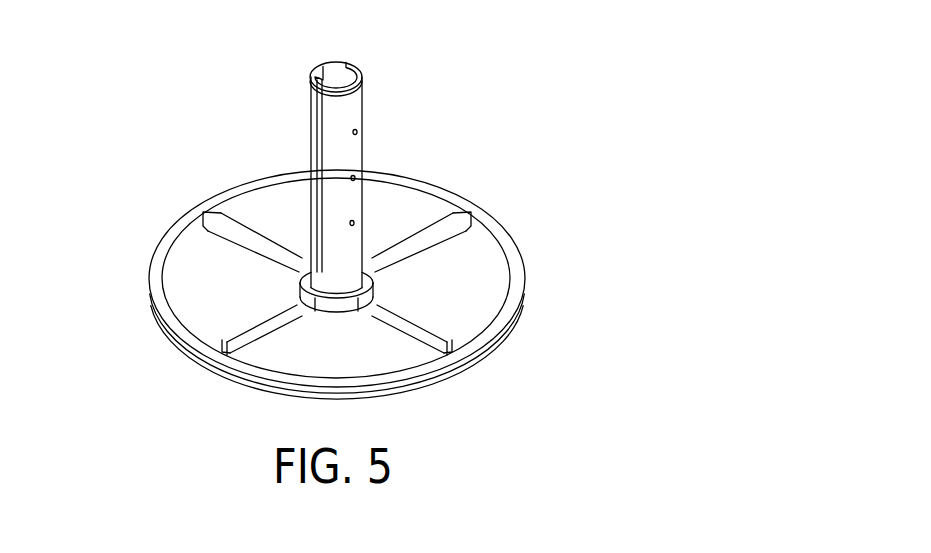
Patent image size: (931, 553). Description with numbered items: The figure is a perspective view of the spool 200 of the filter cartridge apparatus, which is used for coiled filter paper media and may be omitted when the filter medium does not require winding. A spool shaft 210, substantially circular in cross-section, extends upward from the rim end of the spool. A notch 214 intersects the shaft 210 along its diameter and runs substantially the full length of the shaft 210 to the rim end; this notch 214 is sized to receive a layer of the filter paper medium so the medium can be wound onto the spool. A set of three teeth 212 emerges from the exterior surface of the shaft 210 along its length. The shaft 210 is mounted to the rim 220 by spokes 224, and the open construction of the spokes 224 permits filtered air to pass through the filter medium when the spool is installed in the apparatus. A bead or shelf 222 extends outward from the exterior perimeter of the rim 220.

The spool 200 is at (135, 53).
The spool shaft 210 is at (355, 103).
The tooth 212 is at (360, 128).
The notch 214 is at (318, 148).
The rim 220 is at (462, 350).
The bead or shelf 222 is at (178, 346).
The spokes 224 is at (243, 232).